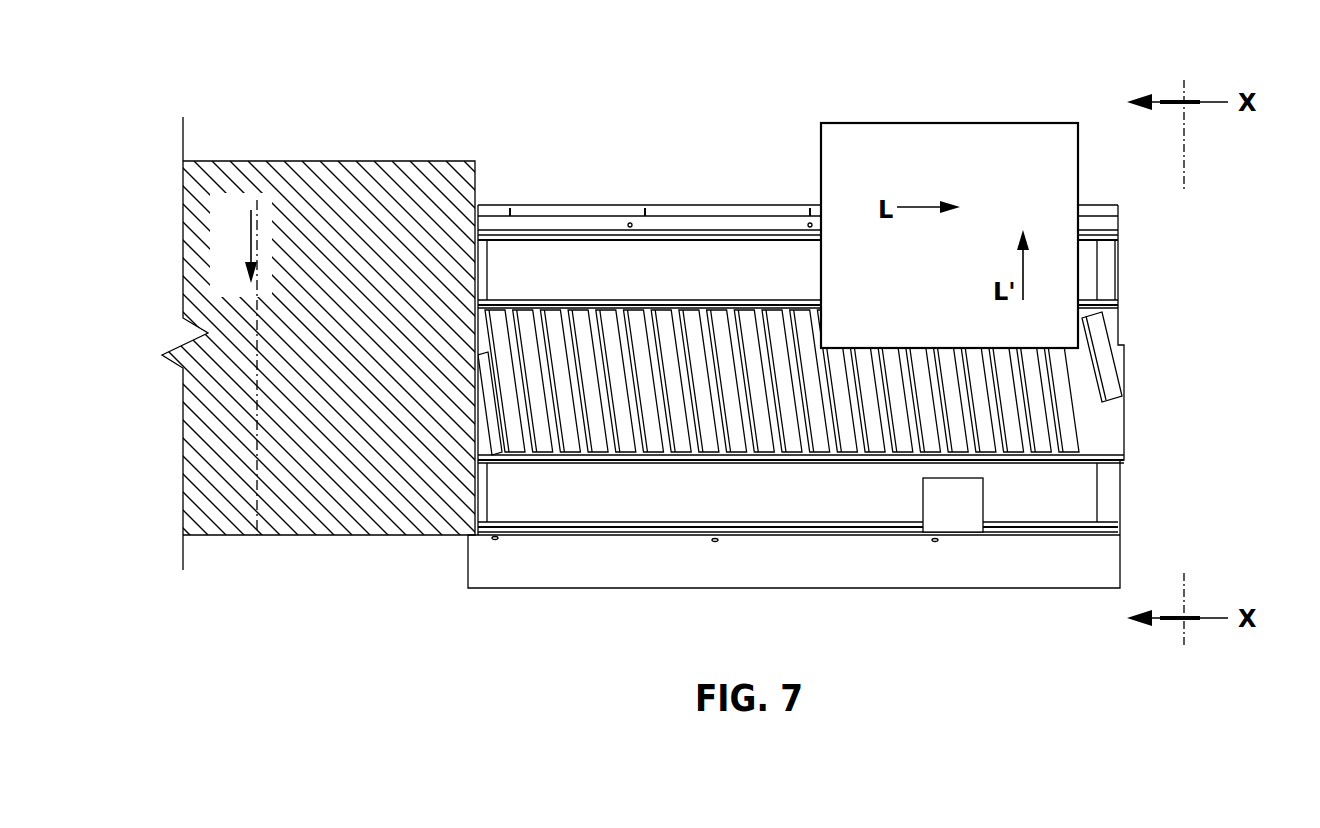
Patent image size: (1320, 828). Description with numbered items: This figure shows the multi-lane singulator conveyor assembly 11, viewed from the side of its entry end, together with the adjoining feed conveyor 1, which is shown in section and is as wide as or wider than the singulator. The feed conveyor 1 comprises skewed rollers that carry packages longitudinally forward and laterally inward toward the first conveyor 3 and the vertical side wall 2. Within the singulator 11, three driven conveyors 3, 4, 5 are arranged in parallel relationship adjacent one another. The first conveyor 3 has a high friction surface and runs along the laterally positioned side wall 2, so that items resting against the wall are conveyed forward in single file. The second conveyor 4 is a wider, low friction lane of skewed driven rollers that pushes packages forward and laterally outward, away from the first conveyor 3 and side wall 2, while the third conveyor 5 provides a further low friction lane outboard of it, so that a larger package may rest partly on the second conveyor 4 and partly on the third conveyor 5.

The feed conveyor 1 is at (257, 505).
The vertical side wall 2 is at (367, 538).
The first conveyor 3 is at (785, 505).
The second conveyor 4 is at (660, 338).
The third conveyor 5 is at (515, 258).
The singulator conveyor assembly 11 is at (700, 80).